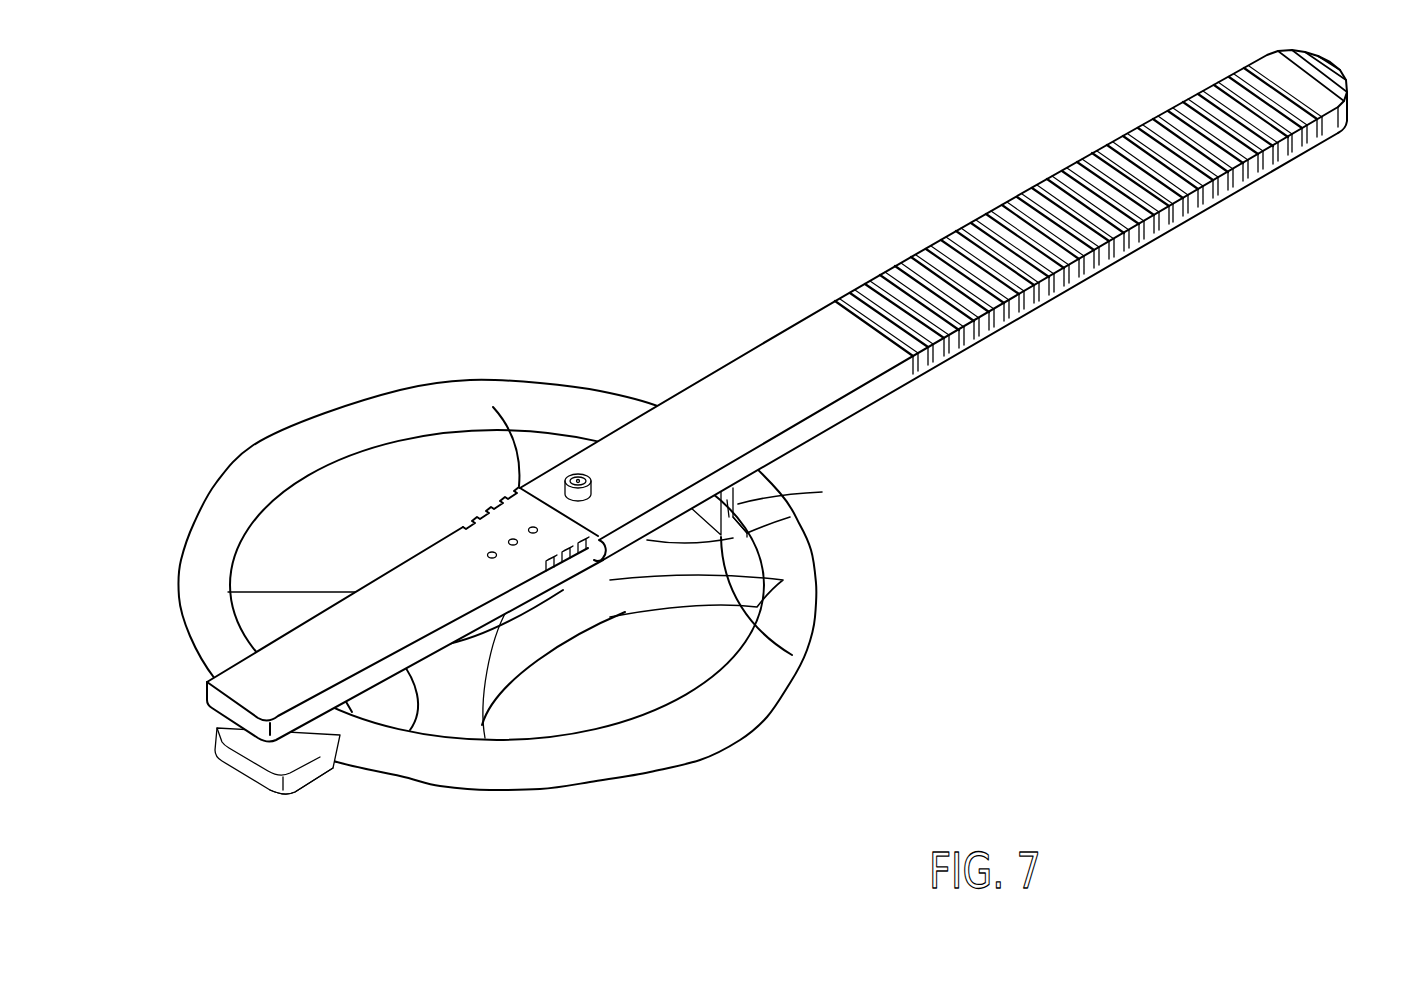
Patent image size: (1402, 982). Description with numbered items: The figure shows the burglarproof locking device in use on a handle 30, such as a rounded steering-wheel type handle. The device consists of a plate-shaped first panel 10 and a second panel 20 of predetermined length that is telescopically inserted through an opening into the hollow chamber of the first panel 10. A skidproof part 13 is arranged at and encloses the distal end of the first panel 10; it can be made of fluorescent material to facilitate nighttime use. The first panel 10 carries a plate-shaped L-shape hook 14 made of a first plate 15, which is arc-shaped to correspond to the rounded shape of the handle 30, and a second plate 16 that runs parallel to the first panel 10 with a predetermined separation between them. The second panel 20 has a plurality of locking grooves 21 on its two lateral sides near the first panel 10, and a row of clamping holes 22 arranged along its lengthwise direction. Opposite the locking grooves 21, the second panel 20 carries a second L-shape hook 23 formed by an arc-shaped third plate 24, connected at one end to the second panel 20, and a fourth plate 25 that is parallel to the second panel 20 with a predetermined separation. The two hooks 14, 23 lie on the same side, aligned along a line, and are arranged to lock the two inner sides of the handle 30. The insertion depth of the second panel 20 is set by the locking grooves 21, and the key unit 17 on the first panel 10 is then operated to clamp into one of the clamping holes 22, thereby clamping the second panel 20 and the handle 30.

The first panel 10 is at (777, 396).
The skidproof part 13 is at (983, 251).
The L-shape hook 14 is at (747, 503).
The first plate 15 is at (748, 527).
The second plate 16 is at (753, 618).
The key unit 17 is at (577, 473).
The second panel 20 is at (440, 563).
The locking grooves 21 is at (563, 570).
The clamping holes 22 is at (505, 540).
The second L-shape hook 23 is at (322, 787).
The third plate 24 is at (340, 707).
The fourth plate 25 is at (293, 793).
The handle 30 is at (255, 445).